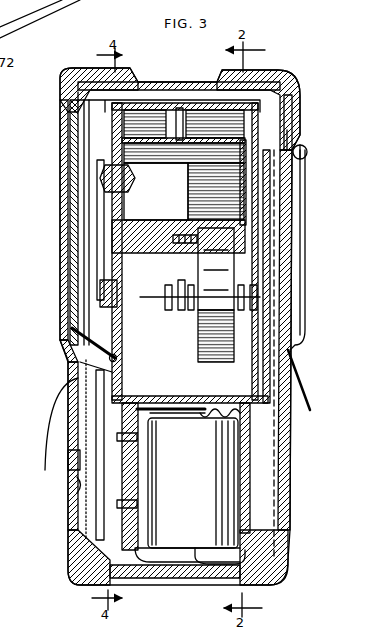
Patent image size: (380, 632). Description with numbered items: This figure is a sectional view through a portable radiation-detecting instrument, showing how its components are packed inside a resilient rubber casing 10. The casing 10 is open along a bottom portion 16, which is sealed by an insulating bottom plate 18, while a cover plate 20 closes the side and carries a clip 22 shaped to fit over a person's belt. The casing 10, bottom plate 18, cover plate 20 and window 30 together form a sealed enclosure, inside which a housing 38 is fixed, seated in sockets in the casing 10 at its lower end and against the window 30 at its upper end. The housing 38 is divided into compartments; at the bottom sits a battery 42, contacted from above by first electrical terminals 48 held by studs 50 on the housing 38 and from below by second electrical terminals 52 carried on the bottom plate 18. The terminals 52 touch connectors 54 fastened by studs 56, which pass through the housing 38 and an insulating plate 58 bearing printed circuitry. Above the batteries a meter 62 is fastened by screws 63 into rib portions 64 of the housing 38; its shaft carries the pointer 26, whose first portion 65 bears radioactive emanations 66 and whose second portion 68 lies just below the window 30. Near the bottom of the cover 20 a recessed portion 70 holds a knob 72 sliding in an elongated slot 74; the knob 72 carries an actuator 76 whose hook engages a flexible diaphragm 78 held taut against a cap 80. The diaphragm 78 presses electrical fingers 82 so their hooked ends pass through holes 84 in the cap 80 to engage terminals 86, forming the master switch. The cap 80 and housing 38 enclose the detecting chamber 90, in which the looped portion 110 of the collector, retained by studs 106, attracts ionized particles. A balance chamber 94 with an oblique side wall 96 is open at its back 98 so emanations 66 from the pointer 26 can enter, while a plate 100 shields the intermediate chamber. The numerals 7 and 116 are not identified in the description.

The switch member 7 is at (100, 353).
The casing 10 is at (306, 82).
The bottom portion 16 is at (238, 583).
The bottom plate 18 is at (132, 578).
The cover plate 20 is at (308, 150).
The clip 22 is at (306, 222).
The pointer 26 is at (252, 270).
The window 30 is at (208, 88).
The housing 38 is at (137, 97).
The battery 42 is at (215, 420).
The first electrical terminals 48 is at (177, 404).
The studs 50 is at (137, 438).
The second electrical terminals 52 is at (213, 540).
The connectors 54 is at (145, 537).
The studs 56 is at (143, 503).
The plate 58 is at (132, 470).
The meter 62 is at (290, 350).
The screws 63 is at (245, 235).
The rib portions 64 is at (143, 238).
The first portion 65 is at (293, 115).
The radioactive emanations 66 is at (257, 190).
The second portion 68 is at (258, 72).
The recessed portion 70 is at (62, 338).
The knob 72 is at (53, 427).
The elongated slot 74 is at (67, 453).
The actuator 76 is at (85, 400).
The flexible diaphragm 78 is at (88, 500).
The cap 80 is at (72, 285).
The electrical fingers 82 is at (82, 375).
The holes 84 is at (117, 359).
The electrical terminals 86 is at (118, 364).
The detecting chamber 90 is at (86, 155).
The balance chamber 94 is at (185, 122).
The side wall 96 is at (158, 104).
The open back 98 is at (288, 140).
The plate 100 is at (268, 205).
The studs 106 is at (104, 175).
The looped portion 110 is at (107, 210).
The motor 116 is at (184, 209).